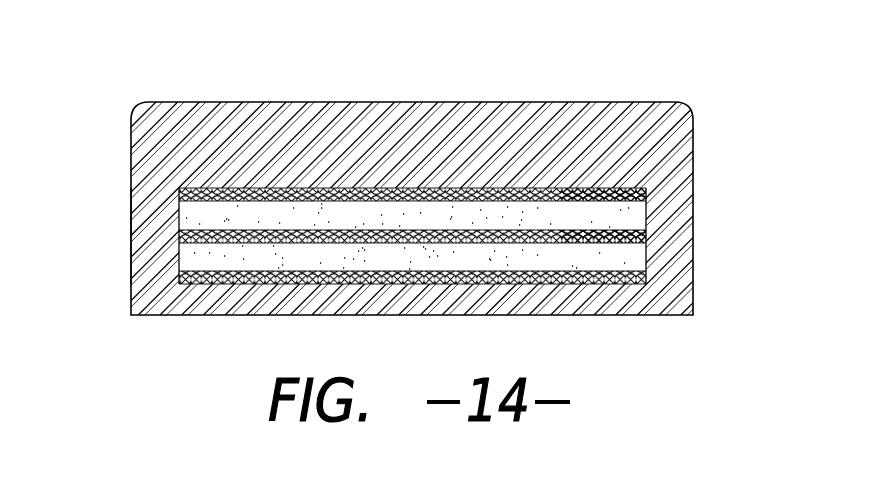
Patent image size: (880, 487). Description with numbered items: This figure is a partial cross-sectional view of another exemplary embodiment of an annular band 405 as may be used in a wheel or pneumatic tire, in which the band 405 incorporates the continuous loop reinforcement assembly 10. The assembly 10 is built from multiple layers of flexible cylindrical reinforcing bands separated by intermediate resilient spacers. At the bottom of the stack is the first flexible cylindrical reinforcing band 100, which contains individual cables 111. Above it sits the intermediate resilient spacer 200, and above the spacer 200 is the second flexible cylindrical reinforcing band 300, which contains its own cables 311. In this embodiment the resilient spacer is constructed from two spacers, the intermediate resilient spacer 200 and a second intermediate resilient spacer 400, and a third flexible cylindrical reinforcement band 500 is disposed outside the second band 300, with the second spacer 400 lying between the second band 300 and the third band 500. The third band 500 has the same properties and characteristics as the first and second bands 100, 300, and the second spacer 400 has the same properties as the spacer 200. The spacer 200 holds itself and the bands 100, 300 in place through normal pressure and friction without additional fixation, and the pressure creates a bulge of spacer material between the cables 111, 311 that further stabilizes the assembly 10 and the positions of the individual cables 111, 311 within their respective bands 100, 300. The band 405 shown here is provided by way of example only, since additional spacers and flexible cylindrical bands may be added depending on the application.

The continuous loop reinforcement assembly 10 is at (554, 181).
The first flexible cylindrical reinforcing band 100 is at (662, 277).
The cables 111 is at (249, 268).
The intermediate resilient spacer 200 is at (413, 230).
The second flexible cylindrical reinforcing band 300 is at (670, 236).
The cables 311 is at (235, 190).
The second intermediate resilient spacer 400 is at (489, 219).
The annular band 405 is at (152, 220).
The third flexible cylindrical reinforcement band 500 is at (656, 192).